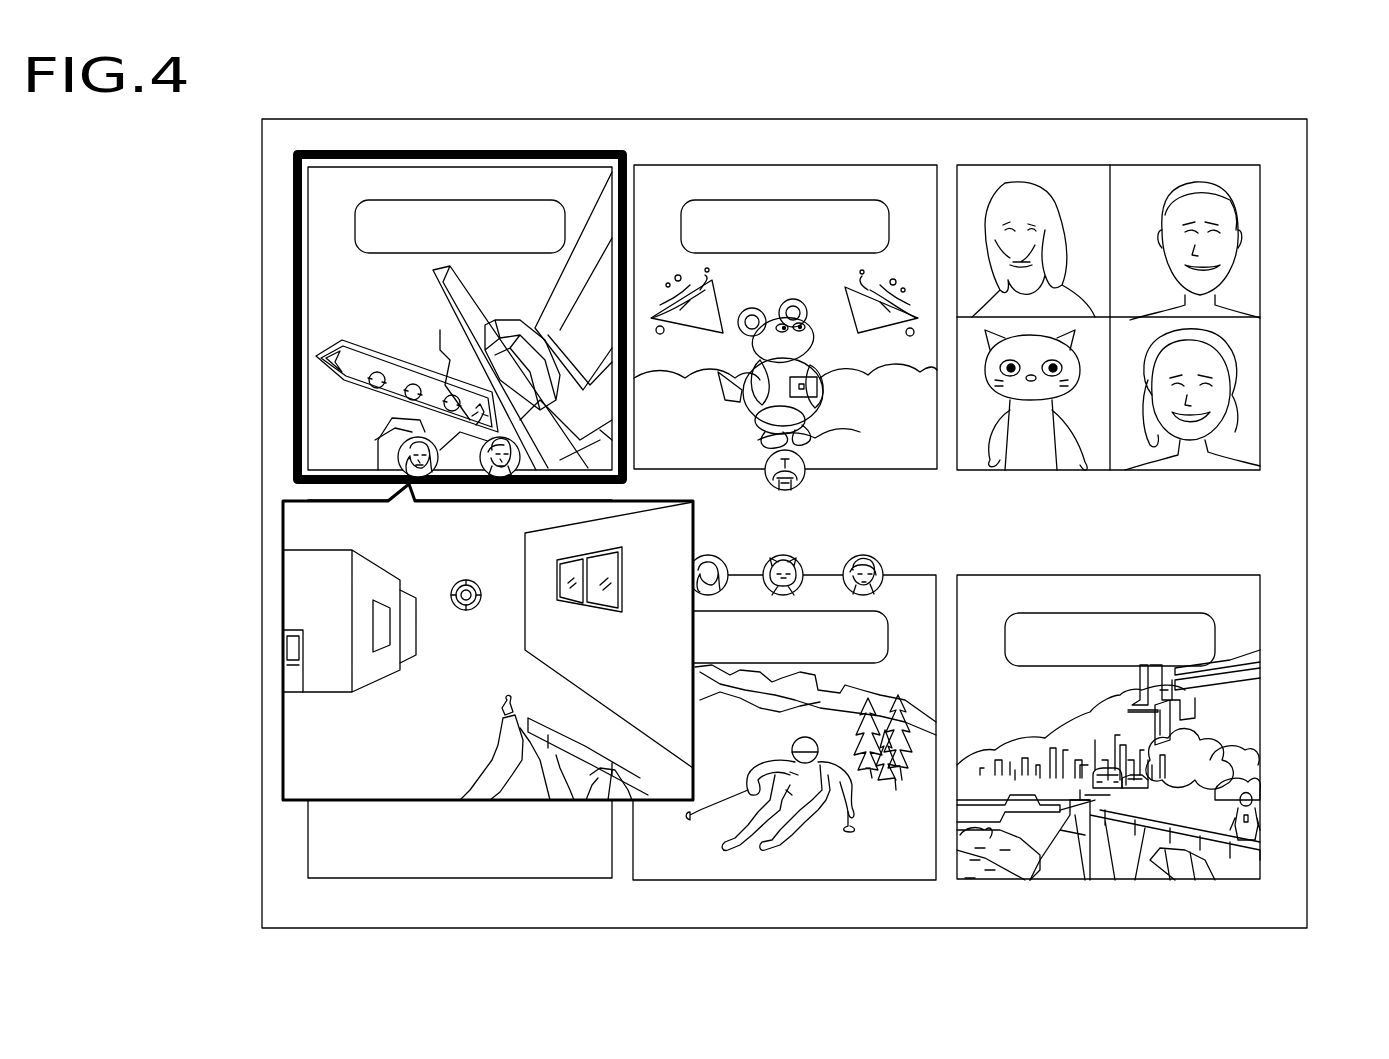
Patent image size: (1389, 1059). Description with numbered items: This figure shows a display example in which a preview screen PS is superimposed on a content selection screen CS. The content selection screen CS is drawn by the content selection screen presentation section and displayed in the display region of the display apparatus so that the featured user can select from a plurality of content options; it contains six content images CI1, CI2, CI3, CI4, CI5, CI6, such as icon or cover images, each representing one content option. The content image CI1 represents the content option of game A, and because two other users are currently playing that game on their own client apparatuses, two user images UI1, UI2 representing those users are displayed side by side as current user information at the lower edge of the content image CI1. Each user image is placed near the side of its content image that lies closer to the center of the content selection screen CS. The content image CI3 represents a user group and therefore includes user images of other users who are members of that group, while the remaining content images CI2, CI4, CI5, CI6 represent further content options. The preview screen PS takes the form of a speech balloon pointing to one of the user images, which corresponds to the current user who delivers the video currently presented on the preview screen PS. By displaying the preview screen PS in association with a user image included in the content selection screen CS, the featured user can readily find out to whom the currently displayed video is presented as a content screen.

The content selection screen CS is at (1308, 360).
The content image CI1 is at (562, 165).
The content image CI2 is at (880, 165).
The content image CI3 is at (1217, 165).
The content image CI4 is at (572, 880).
The content image CI5 is at (881, 880).
The content image CI6 is at (1244, 880).
The user image UI1 is at (410, 452).
The user image UI2 is at (480, 440).
The preview screen PS is at (283, 762).